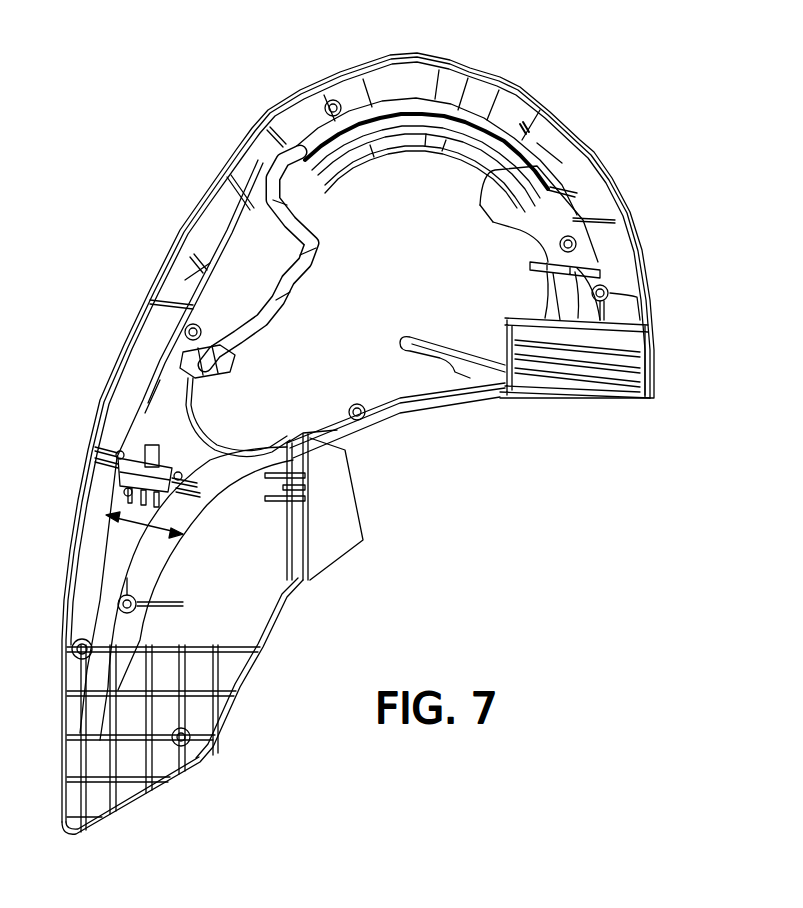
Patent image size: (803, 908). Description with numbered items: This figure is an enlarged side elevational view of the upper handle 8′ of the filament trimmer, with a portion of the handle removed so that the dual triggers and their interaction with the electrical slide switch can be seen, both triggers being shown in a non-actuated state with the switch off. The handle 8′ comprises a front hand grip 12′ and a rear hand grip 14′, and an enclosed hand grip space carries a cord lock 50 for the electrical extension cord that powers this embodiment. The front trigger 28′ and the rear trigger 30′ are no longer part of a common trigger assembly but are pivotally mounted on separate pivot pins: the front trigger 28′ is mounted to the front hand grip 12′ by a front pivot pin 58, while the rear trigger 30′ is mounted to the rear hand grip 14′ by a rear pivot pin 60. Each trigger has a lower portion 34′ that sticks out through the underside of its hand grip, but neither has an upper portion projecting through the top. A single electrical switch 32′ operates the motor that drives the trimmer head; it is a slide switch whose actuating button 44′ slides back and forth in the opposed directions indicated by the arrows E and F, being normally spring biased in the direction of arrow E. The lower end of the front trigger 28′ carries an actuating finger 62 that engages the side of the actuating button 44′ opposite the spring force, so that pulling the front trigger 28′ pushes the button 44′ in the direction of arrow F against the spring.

The handle 8′ is at (425, 55).
The rear hand grip 14′ is at (566, 128).
The front hand grip 12′ is at (174, 244).
The front pivot pin 58 is at (184, 332).
The actuating finger 62 is at (145, 413).
The rear pivot pin 60 is at (578, 243).
The cord lock 50 is at (463, 353).
The lower portion 34′ is at (255, 318).
The rear trigger 30′ is at (538, 218).
The front trigger 28′ is at (270, 264).
The actuating button 44′ is at (152, 456).
The electrical switch 32′ is at (128, 479).